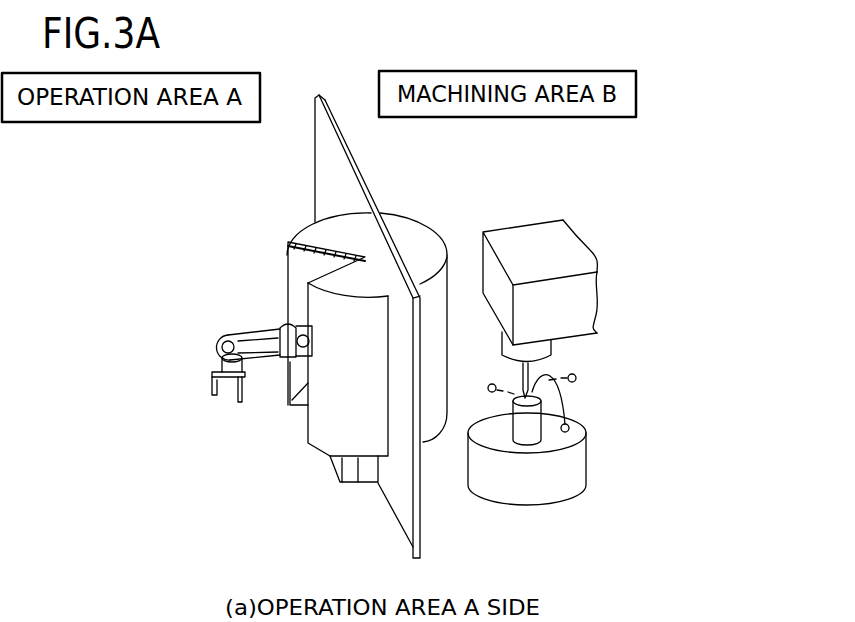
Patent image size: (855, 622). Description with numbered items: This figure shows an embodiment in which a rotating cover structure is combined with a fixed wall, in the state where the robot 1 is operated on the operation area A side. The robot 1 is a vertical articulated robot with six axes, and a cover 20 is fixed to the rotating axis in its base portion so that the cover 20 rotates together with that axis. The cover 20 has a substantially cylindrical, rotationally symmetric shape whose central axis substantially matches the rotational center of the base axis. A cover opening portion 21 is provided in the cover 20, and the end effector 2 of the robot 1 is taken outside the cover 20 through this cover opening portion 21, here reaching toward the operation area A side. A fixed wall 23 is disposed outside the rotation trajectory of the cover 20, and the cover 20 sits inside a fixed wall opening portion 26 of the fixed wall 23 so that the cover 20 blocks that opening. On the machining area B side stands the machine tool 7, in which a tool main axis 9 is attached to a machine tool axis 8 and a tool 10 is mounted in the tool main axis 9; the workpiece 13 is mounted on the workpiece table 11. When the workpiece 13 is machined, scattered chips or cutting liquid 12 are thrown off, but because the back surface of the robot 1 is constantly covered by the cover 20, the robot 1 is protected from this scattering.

The robot 1 is at (222, 338).
The end effector 2 is at (212, 374).
The machine tool 7 is at (560, 192).
The machine tool axis 8 is at (563, 247).
The tool main axis 9 is at (545, 345).
The tool 10 is at (533, 370).
The workpiece table 11 is at (540, 487).
The scattered chip or cutting liquid 12 is at (576, 378).
The workpiece 13 is at (532, 437).
The cover 20 is at (322, 435).
The cover opening portion 21 is at (305, 272).
The fixed wall 23 is at (408, 538).
The fixed wall opening portion 26 is at (372, 456).